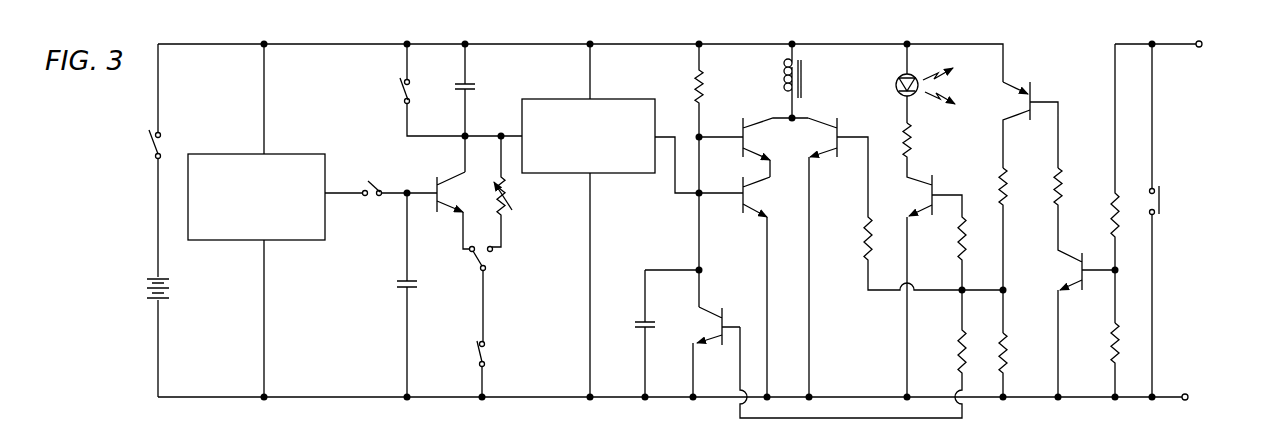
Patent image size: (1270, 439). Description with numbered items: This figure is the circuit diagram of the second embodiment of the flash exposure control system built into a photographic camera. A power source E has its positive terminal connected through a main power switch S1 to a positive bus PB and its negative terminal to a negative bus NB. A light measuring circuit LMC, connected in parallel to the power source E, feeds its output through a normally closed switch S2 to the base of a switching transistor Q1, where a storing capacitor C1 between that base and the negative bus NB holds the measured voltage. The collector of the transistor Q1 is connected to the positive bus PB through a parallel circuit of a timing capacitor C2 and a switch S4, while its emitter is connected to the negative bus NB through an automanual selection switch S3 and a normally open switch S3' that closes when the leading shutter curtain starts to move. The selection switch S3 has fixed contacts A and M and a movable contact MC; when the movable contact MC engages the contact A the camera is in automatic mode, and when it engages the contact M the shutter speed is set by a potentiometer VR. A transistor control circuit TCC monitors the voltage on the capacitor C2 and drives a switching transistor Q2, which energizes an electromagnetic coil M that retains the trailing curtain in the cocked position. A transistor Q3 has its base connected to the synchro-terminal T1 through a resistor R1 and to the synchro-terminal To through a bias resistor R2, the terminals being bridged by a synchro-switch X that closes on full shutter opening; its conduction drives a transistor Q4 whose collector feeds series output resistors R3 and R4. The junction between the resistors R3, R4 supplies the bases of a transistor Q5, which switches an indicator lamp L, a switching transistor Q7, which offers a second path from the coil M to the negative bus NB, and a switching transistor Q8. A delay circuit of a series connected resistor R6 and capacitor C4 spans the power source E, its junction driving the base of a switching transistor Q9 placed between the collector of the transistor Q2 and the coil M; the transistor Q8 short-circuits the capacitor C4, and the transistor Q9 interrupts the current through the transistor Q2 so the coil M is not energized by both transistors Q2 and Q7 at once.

The main power switch S1 is at (150, 146).
The power source E is at (143, 288).
The light measuring circuit LMC is at (225, 153).
The positive bus PB is at (302, 45).
The switch S2 is at (374, 200).
The switch S4 is at (398, 94).
The storing capacitor C1 is at (400, 286).
The timing capacitor C2 is at (475, 88).
The switching transistor Q1 is at (448, 168).
The potentiometer VR is at (516, 196).
The fixed contact A is at (473, 244).
The electromagnetic coil M is at (494, 252).
The movable contact MC is at (472, 258).
The automanual selection switch S3 is at (459, 297).
The switch S3' is at (452, 369).
The transistor control circuit TCC is at (627, 174).
The negative bus NB is at (538, 398).
The resistor R6 is at (695, 90).
The switching transistor Q9 is at (755, 117).
The switching transistor Q2 is at (751, 216).
The switching transistor Q7 is at (823, 154).
The indicator lamp L is at (895, 85).
The transistor Q5 is at (925, 180).
The switching transistor Q8 is at (702, 331).
The capacitor C4 is at (639, 326).
The transistor Q4 is at (1016, 94).
The output resistor R3 is at (1006, 178).
The output resistor R4 is at (1008, 342).
The transistor Q3 is at (1074, 263).
The resistor R1 is at (1112, 208).
The bias resistor R2 is at (1112, 326).
The synchro-switch X is at (1161, 202).
The synchro-terminal T1 is at (1215, 50).
The synchro-terminal To is at (1200, 400).